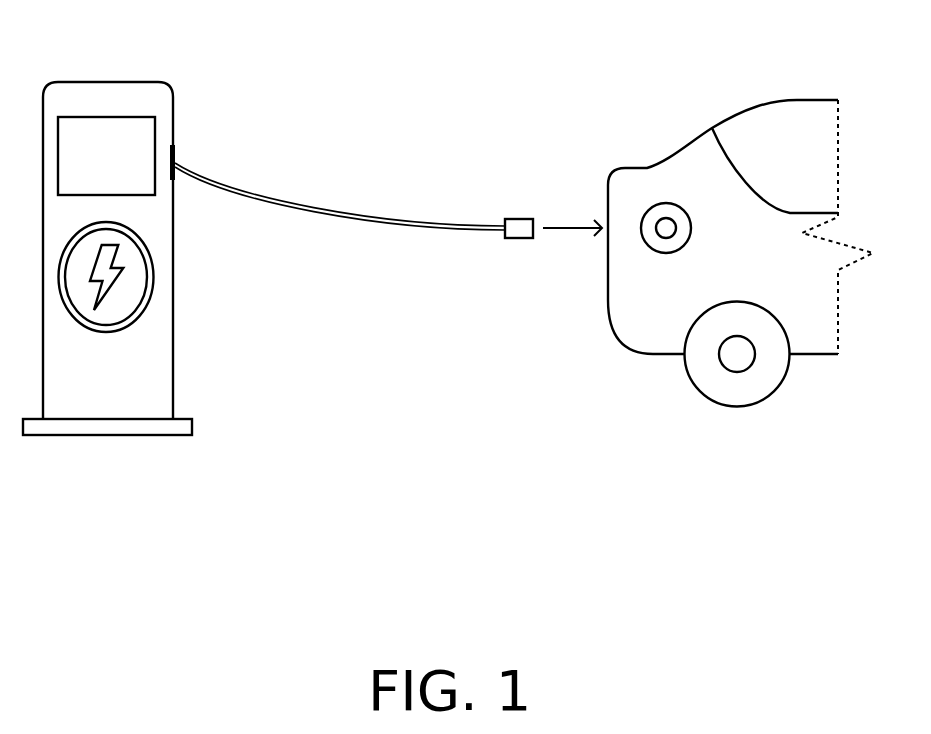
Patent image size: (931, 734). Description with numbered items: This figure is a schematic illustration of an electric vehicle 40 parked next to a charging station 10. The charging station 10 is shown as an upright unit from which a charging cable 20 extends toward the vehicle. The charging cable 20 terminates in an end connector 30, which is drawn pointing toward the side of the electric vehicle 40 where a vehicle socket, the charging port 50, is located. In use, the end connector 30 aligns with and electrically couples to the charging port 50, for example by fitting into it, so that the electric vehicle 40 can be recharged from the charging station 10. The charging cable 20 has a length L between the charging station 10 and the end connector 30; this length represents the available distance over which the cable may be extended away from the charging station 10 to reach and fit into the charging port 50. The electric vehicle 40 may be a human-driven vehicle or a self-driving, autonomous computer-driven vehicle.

The charging station 10 is at (93, 81).
The charging cable 20 is at (218, 190).
The end connector 30 is at (513, 221).
The electric vehicle 40 is at (780, 100).
The charging port 50 is at (689, 225).